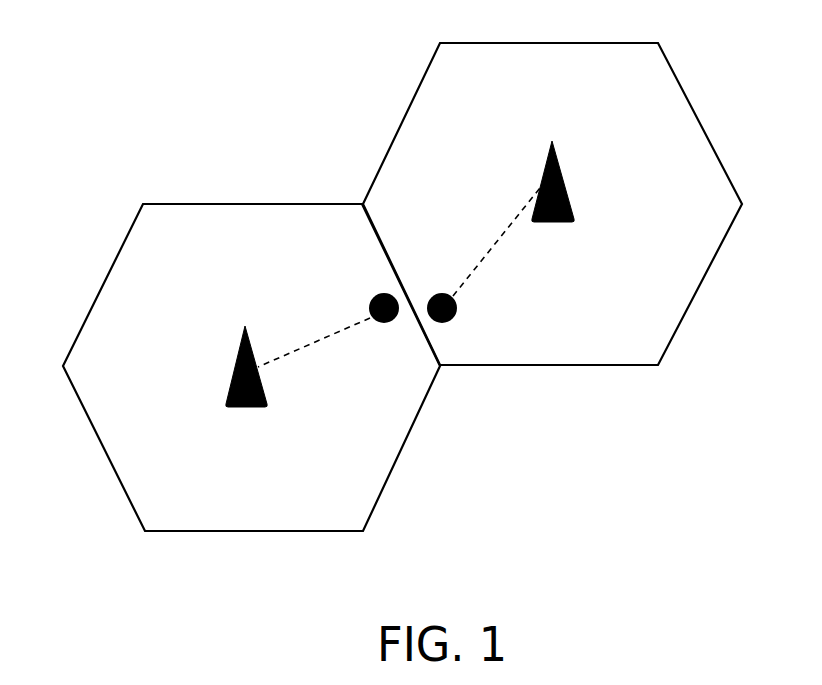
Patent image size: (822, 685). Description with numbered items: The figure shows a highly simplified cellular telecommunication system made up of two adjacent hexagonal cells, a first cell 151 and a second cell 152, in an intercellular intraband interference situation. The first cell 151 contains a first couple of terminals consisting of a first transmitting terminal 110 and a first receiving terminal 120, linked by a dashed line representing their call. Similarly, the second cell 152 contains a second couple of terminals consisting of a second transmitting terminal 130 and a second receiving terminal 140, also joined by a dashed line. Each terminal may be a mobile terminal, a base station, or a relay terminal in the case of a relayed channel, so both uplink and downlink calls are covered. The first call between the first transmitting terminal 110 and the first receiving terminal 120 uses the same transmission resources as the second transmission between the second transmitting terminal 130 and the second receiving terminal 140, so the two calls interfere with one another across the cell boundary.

The first transmitting terminal 110 is at (558, 164).
The first receiving terminal 120 is at (452, 320).
The second transmitting terminal 130 is at (230, 379).
The second receiving terminal 140 is at (371, 300).
The first cell 151 is at (678, 80).
The second cell 152 is at (147, 533).